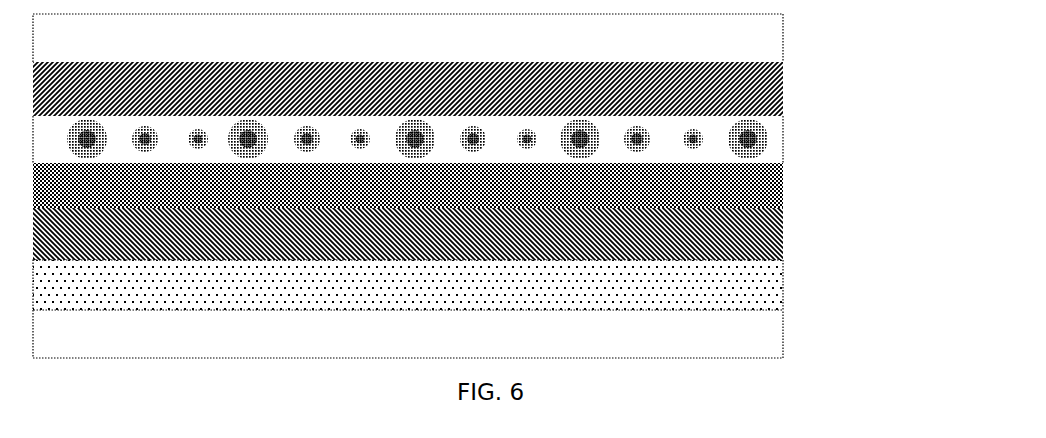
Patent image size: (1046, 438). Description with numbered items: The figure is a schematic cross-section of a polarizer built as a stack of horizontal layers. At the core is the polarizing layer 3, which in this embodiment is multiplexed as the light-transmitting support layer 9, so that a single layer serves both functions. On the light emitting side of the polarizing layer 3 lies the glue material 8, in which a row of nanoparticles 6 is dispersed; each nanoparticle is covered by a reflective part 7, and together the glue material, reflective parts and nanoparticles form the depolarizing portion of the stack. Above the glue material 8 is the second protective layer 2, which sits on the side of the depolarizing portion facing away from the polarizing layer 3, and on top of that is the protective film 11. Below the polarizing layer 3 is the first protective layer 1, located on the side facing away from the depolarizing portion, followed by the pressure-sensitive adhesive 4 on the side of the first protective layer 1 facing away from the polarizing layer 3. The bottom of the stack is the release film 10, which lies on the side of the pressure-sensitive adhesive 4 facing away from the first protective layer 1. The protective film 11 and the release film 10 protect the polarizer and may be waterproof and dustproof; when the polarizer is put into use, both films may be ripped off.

The protective film 11 is at (783, 40).
The second protective layer 2 is at (783, 88).
The reflective part 7 is at (766, 122).
The nanoparticles 6 is at (756, 142).
The glue material 8 is at (455, 142).
The polarizing layer 3 is at (783, 193).
The light-transmitting support layer 9 is at (408, 185).
The first protective layer 1 is at (783, 249).
The pressure-sensitive adhesive 4 is at (783, 285).
The release film 10 is at (783, 333).